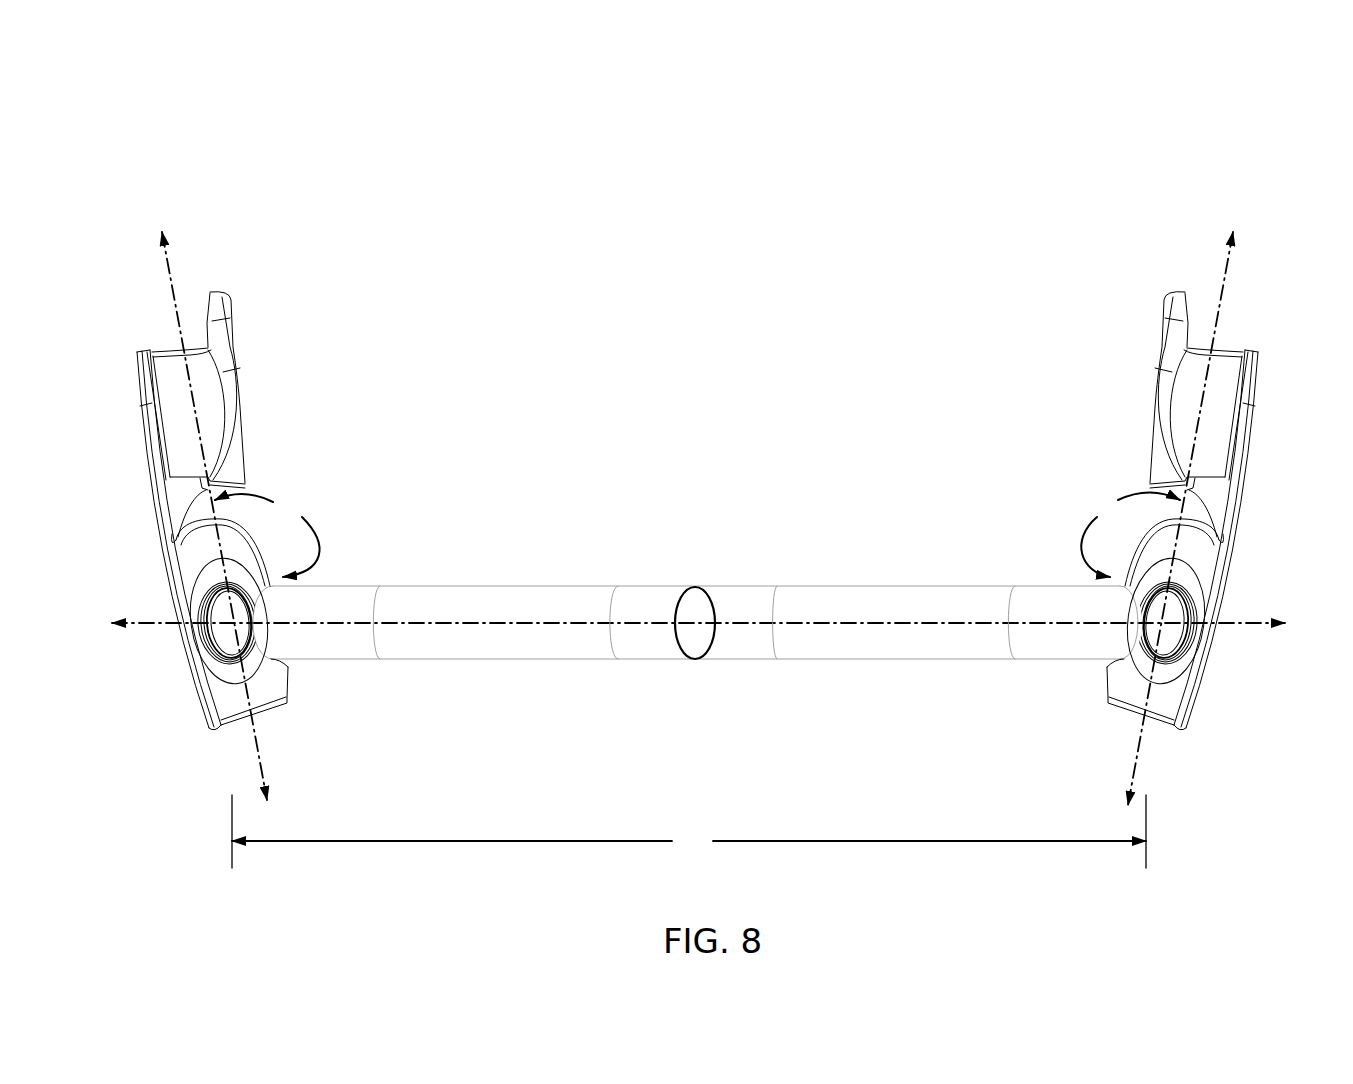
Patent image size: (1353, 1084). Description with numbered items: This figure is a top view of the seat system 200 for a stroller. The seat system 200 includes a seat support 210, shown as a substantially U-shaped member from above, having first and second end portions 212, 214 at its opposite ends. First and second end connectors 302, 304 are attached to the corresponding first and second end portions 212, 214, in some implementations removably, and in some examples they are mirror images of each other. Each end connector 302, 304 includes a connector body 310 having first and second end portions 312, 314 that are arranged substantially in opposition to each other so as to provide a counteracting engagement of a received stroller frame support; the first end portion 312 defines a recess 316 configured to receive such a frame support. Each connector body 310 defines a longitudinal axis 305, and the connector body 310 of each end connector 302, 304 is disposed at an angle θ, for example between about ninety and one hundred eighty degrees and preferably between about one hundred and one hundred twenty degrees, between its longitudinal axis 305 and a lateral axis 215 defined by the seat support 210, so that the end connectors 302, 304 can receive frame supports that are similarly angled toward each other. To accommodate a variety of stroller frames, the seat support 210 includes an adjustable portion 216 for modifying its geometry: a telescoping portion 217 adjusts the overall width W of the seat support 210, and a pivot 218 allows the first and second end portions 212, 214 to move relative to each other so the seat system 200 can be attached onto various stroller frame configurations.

The seat system 200 is at (365, 108).
The seat support 210 is at (695, 627).
The first end portion 212 is at (325, 585).
The second end portion 214 is at (1070, 585).
The lateral axis 215 is at (724, 624).
The adjustable portion 216 is at (716, 616).
The telescoping portion 217 is at (740, 607).
The pivot 218 is at (690, 600).
The first end connector 302 is at (243, 438).
The second end connector 304 is at (1152, 437).
The longitudinal axis 305 is at (696, 502).
The connector body 310 is at (185, 568).
The first end portion 312 is at (247, 348).
The second end portion 314 is at (180, 698).
The recess 316 is at (176, 375).